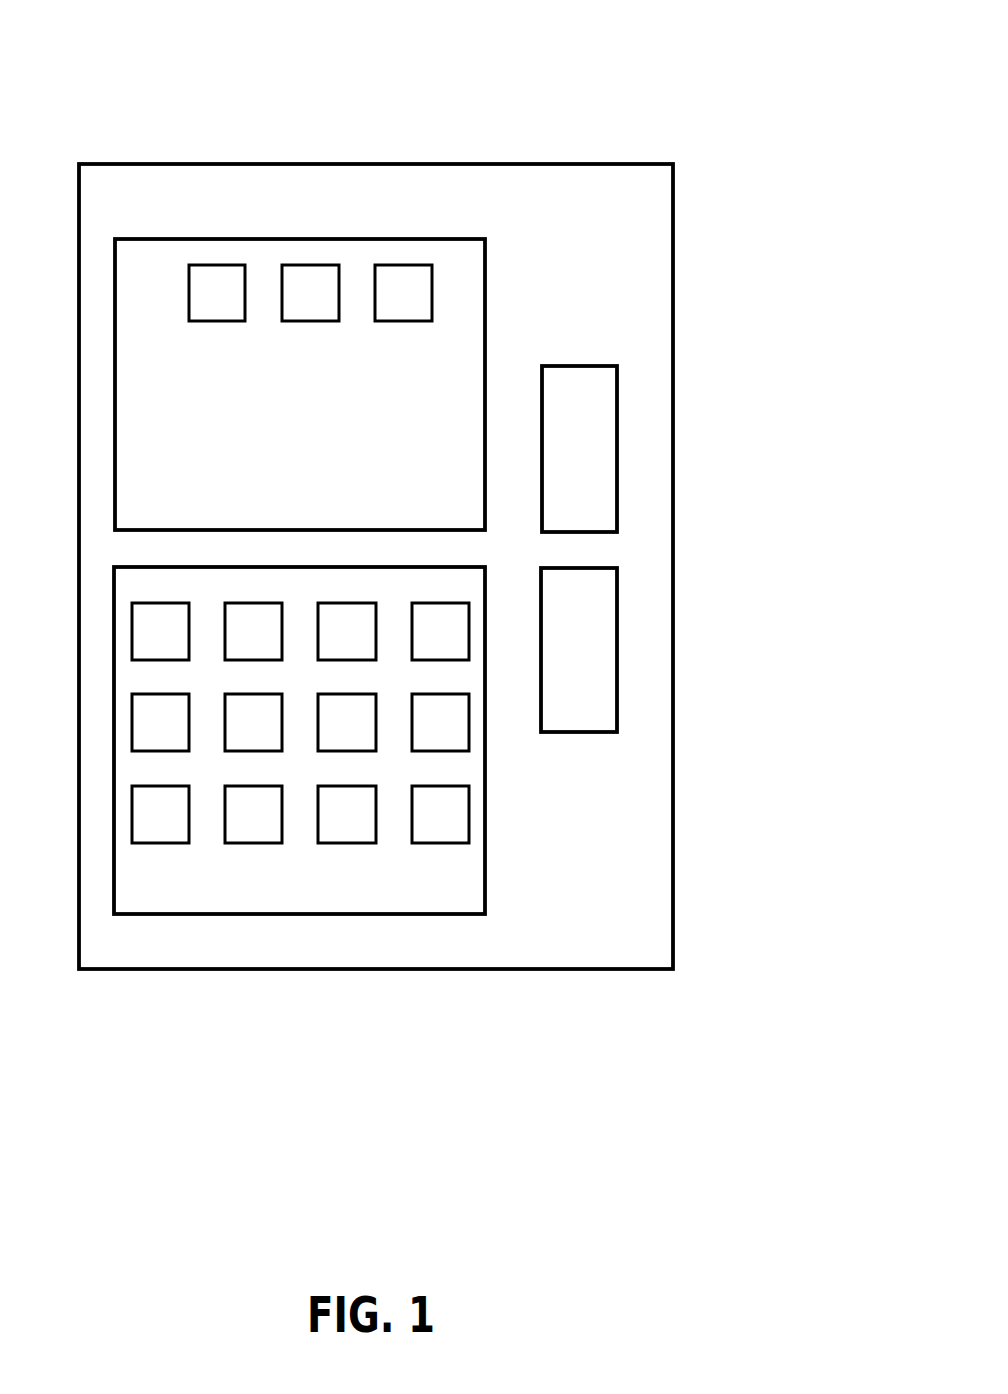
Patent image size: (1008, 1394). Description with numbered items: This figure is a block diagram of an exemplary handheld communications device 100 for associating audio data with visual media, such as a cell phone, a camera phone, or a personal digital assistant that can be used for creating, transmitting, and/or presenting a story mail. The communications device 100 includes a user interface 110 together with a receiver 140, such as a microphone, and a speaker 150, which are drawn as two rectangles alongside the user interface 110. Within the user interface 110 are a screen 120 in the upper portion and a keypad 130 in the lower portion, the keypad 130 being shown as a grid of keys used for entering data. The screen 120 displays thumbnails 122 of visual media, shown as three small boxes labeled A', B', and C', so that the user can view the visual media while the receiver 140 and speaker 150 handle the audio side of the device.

The communications device 100 is at (624, 49).
The user interface 110 is at (406, 954).
The screen 120 is at (366, 507).
The thumbnails 122 is at (403, 258).
The keypad 130 is at (373, 899).
The receiver 140 is at (597, 650).
The speaker 150 is at (597, 440).